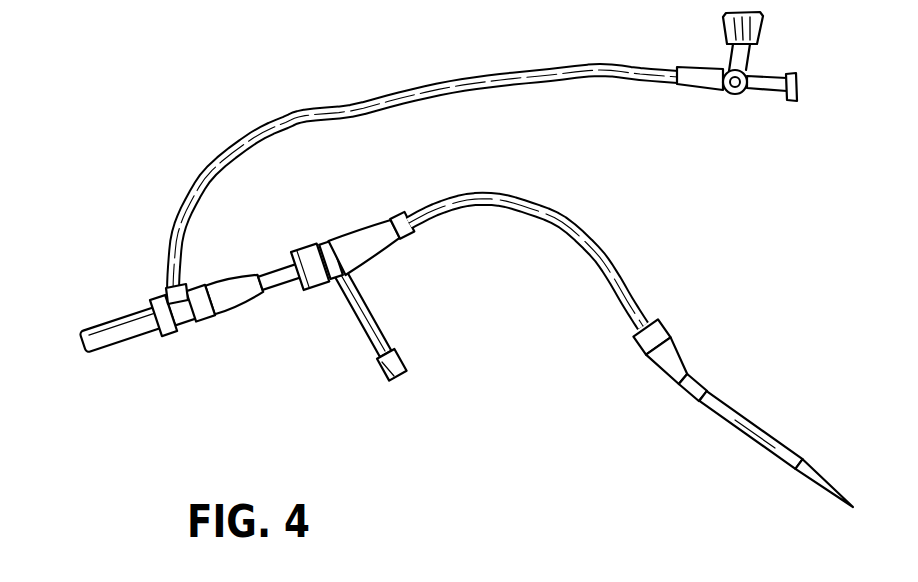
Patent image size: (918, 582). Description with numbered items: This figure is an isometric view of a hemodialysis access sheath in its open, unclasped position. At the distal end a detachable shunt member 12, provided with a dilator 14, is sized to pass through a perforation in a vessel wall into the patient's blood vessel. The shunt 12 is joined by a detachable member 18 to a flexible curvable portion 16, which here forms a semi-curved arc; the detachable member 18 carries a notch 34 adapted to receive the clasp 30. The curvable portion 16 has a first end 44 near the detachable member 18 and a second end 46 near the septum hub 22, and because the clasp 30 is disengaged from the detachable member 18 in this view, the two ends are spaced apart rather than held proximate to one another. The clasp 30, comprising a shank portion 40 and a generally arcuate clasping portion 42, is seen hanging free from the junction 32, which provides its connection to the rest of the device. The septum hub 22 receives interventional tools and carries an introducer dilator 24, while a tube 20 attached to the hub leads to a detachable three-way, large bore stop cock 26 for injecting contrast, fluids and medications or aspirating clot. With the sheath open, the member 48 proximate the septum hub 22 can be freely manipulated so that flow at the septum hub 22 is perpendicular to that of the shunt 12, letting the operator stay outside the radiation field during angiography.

The detachable shunt member 12 is at (735, 413).
The dilator 14 is at (808, 470).
The curvable portion 16 is at (560, 215).
The detachable member 18 is at (673, 360).
The tube 20 is at (347, 106).
The septum hub 22 is at (237, 317).
The introducer dilator 24 is at (133, 333).
The stop cock 26 is at (735, 97).
The clasp 30 is at (384, 329).
The junction 32 is at (330, 243).
The notch 34 is at (664, 327).
The shank portion 40 is at (368, 327).
The clasping portion 42 is at (400, 362).
The first end 44 is at (636, 312).
The second end 46 is at (396, 215).
The member 48 is at (100, 337).